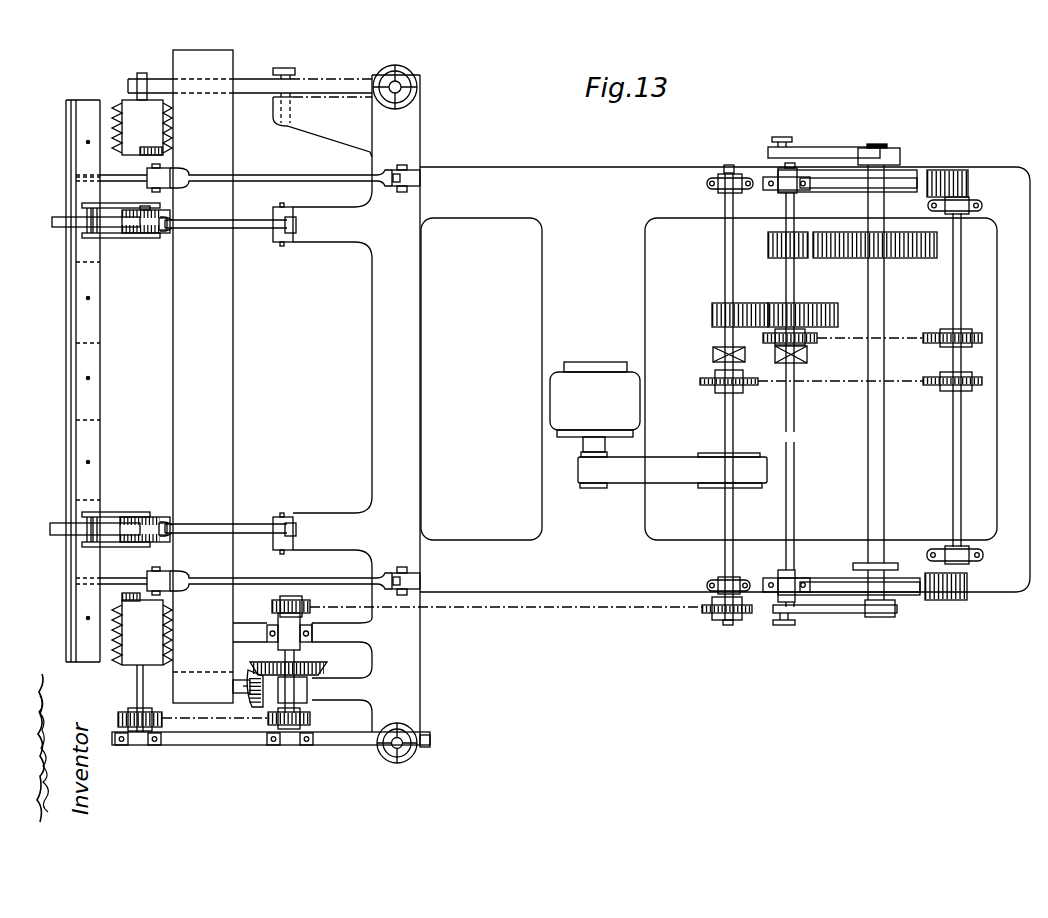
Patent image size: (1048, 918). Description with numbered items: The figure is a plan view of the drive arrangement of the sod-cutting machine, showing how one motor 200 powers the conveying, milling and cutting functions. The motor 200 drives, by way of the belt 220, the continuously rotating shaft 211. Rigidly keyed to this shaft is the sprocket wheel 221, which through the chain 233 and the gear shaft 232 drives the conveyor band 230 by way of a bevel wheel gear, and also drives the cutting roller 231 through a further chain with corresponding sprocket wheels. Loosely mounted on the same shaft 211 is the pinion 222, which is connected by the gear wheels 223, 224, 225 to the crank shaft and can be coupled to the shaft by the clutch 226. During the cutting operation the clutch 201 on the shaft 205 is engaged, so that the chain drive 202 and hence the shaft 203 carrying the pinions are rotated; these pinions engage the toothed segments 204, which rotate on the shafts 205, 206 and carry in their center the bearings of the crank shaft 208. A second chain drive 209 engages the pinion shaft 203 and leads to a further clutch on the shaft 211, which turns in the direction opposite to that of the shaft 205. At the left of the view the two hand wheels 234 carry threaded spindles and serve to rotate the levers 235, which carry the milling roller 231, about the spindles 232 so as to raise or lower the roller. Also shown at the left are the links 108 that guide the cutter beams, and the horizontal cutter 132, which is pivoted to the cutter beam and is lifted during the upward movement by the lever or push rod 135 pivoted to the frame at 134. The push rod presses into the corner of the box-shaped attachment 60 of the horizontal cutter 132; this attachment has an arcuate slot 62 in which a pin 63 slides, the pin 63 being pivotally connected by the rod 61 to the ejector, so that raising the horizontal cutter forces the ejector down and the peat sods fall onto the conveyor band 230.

The box-shaped attachment 60 is at (150, 207).
The rod 61 is at (113, 236).
The arcuate slot 62 is at (167, 228).
The pin 63 is at (157, 236).
The link 108 is at (268, 172).
The horizontal cutter 132 is at (58, 226).
The pivot of lever 134 is at (280, 246).
The lever 135 is at (253, 229).
The motor 200 is at (589, 382).
The clutch 201 is at (807, 357).
The chain drive 202 is at (903, 333).
The shaft carrying the pinions 203 is at (958, 488).
The toothed segments 204 is at (923, 175).
The shaft 205 is at (795, 408).
The shaft 206 is at (790, 500).
The crank shaft 208 is at (878, 441).
The second chain drive 209 is at (930, 378).
The continuously rotating shaft 211 is at (723, 415).
The belt 220 is at (634, 480).
The sprocket wheel 221 is at (705, 614).
The pinion 222 is at (712, 318).
The gear wheel 223 is at (812, 308).
The gear wheel 224 is at (768, 246).
The gear wheel 225 is at (857, 254).
The clutch 226 is at (713, 352).
The conveyor band 230 is at (228, 441).
The cutting roller 231 is at (128, 660).
The gear shaft 232 is at (292, 66).
The chain 233 is at (548, 609).
The hand wheel 234 is at (407, 72).
The lever 235 is at (343, 91).